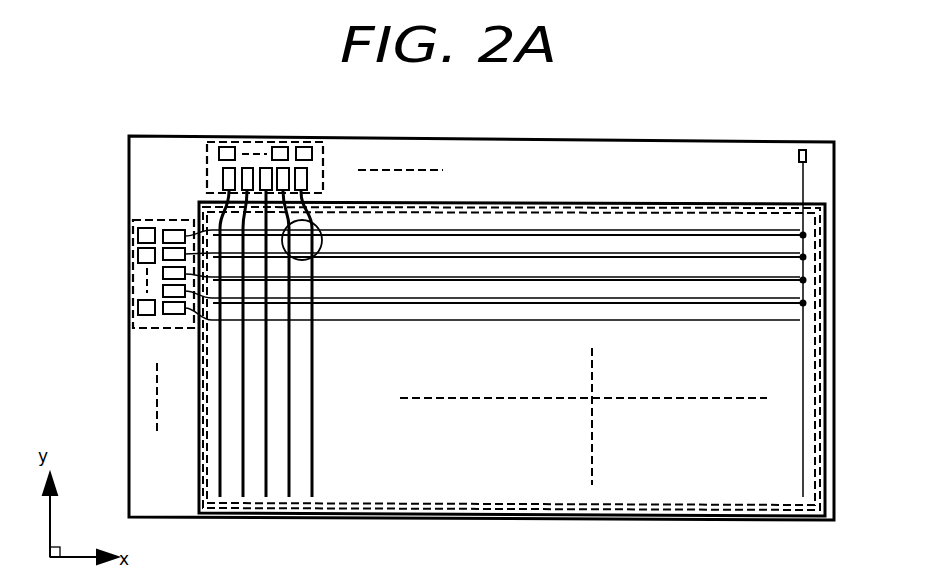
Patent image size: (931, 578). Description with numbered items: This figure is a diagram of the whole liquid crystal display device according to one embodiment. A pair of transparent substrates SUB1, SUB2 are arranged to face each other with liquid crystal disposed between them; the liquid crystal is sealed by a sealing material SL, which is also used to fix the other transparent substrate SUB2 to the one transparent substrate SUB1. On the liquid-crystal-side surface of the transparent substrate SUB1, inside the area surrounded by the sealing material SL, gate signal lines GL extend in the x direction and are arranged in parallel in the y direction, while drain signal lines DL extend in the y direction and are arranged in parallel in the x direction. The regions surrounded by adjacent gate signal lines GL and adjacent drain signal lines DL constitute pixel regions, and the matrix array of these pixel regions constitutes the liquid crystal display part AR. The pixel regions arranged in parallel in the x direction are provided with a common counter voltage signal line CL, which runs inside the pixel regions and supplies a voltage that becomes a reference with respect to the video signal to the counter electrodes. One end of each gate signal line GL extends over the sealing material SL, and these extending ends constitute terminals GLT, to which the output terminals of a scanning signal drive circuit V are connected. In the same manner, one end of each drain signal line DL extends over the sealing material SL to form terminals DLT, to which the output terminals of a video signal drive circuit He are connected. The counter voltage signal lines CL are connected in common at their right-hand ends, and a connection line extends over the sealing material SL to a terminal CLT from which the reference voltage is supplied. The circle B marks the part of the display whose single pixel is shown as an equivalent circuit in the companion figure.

The transparent substrate SUB1 is at (608, 140).
The transparent substrate SUB2 is at (510, 203).
The sealing material SL is at (565, 505).
The video signal drive circuit He is at (238, 142).
The terminals DLT is at (223, 186).
The terminals GLT is at (176, 230).
The scanning signal drive circuit V is at (133, 316).
The gate signal lines GL is at (520, 322).
The counter voltage signal line CL is at (385, 304).
The drain signal lines DL is at (313, 396).
The common line terminal CLT is at (805, 150).
The circle B is at (322, 243).
The liquid crystal display part AR is at (562, 327).